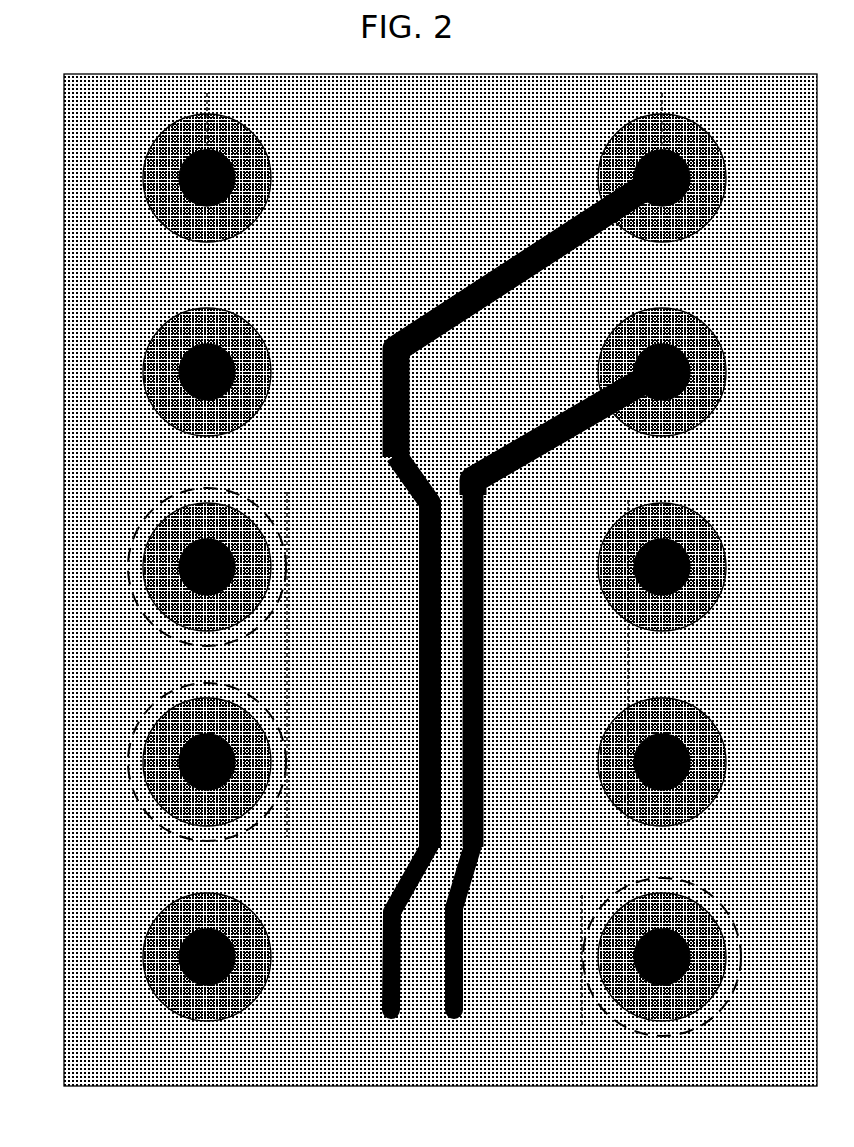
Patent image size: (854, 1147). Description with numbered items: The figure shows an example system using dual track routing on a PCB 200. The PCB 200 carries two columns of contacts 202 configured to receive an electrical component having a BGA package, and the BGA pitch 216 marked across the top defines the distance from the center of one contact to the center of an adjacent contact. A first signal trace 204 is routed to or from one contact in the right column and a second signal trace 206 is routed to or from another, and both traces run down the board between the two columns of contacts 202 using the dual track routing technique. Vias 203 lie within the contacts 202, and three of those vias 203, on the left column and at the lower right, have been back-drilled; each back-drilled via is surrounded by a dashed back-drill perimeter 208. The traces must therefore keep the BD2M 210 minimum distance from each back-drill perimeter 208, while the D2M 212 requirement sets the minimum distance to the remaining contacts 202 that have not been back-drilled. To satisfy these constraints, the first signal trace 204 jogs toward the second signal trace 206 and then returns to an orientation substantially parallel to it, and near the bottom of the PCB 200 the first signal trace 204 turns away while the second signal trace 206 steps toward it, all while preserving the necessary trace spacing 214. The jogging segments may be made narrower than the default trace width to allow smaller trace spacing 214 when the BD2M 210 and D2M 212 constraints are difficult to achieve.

The PCB 200 is at (62, 70).
The contacts 202 is at (436, 589).
The vias 203 is at (246, 366).
The first signal trace 204 is at (501, 593).
The second signal trace 206 is at (558, 678).
The back-drill perimeter 208 is at (135, 614).
The BD2M minimum distance 210 is at (417, 662).
The D2M requirement 212 is at (626, 636).
The trace spacing 214 is at (445, 1003).
The BGA pitch 216 is at (660, 93).